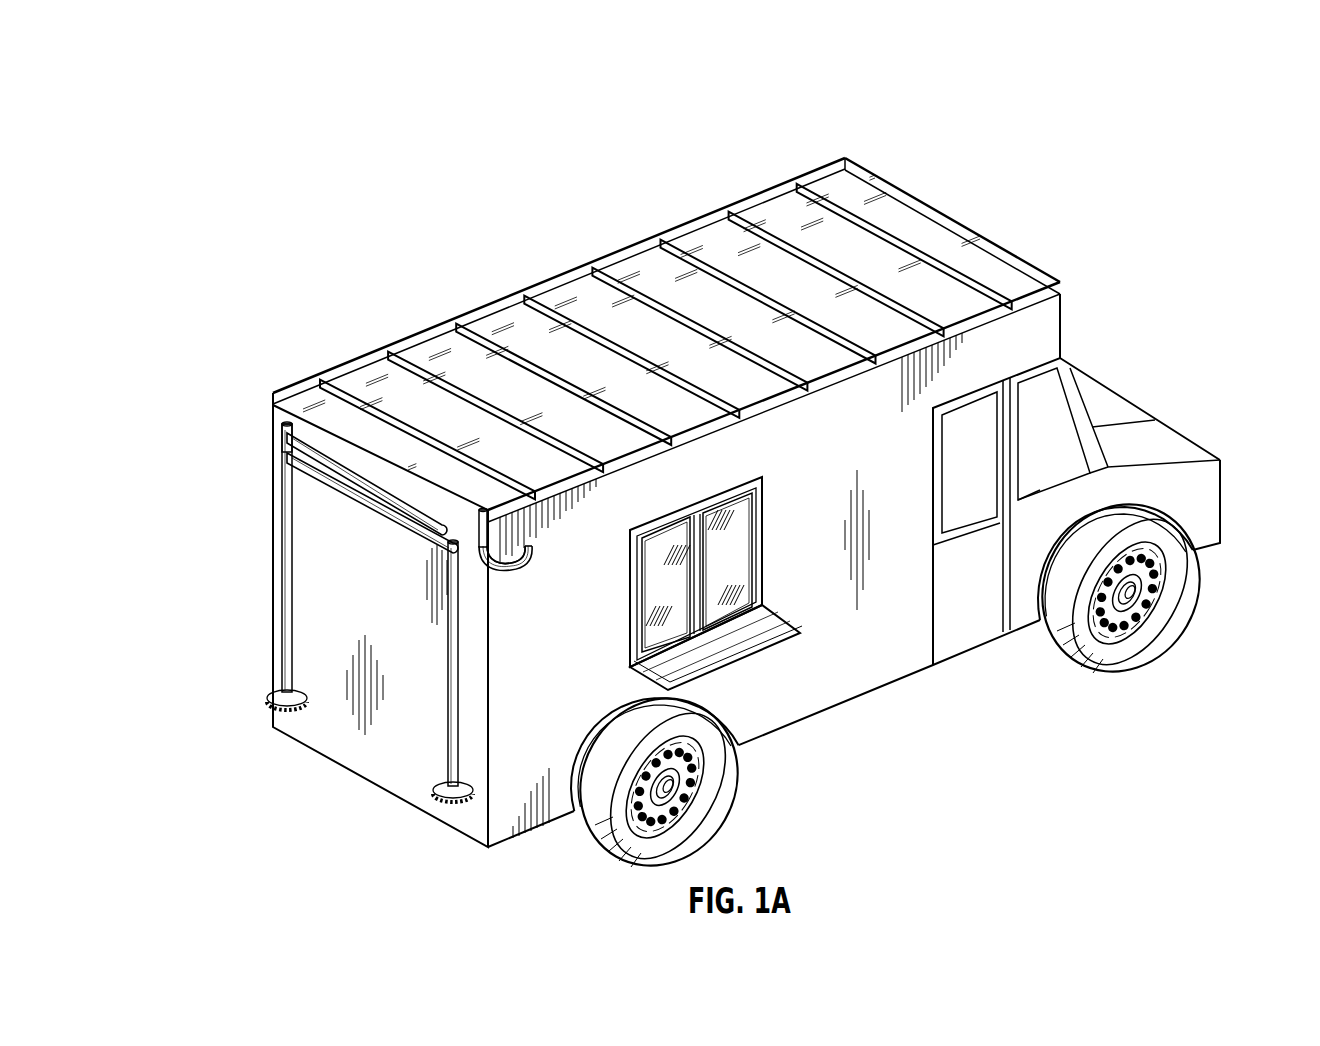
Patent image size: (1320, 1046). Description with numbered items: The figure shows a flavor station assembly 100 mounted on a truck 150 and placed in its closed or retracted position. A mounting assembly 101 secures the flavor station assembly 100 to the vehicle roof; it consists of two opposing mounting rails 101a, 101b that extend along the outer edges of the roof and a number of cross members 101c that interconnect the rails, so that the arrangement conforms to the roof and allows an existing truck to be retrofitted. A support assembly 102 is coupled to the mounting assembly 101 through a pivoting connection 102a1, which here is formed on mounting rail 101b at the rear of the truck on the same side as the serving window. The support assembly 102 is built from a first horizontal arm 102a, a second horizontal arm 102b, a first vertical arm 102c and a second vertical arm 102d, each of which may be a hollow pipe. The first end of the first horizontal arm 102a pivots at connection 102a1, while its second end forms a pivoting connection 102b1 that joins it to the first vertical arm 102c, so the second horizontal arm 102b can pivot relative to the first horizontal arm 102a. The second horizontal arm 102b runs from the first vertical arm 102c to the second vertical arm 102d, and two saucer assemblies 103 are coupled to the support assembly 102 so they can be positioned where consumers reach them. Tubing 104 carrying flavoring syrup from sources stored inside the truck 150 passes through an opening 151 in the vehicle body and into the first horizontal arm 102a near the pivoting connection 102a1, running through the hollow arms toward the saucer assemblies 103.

The flavor station assembly 100 is at (188, 350).
The mounting assembly 101 is at (666, 302).
The mounting rail 101a is at (612, 258).
The mounting rail 101b is at (790, 394).
The cross members 101c is at (745, 272).
The support assembly 102 is at (361, 570).
The first horizontal arm 102a is at (400, 497).
The pivoting connection 102a1 is at (485, 514).
The second horizontal arm 102b is at (370, 512).
The pivoting connection 102b1 is at (289, 449).
The first vertical arm 102c is at (286, 553).
The second vertical arm 102d is at (455, 678).
The saucer assemblies 103 is at (274, 700).
The tubing 104 is at (513, 578).
The truck 150 is at (1212, 390).
The opening 151 is at (530, 548).